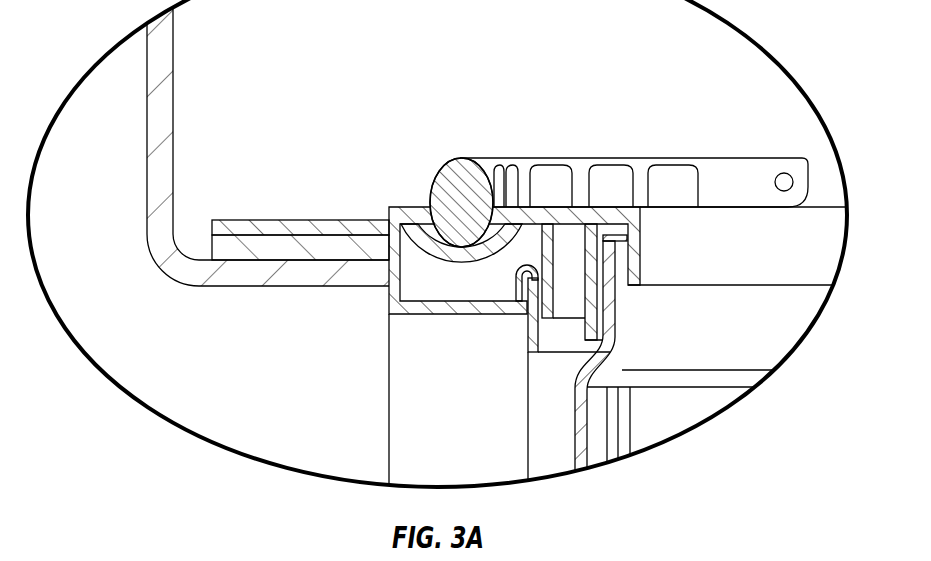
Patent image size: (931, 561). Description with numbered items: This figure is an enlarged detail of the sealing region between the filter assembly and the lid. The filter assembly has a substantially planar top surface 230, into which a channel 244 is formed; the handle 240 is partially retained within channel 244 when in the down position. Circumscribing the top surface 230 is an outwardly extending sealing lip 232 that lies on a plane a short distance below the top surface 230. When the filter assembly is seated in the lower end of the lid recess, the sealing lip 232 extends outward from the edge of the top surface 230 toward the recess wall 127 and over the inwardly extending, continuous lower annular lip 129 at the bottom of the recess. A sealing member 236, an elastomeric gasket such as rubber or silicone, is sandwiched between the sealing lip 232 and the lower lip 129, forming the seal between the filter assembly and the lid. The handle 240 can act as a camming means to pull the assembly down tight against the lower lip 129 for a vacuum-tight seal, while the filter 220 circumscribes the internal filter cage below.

The recess wall 127 is at (147, 145).
The lower annular lip 129 is at (221, 287).
The sealing lip 232 is at (264, 219).
The sealing member 236 is at (212, 248).
The top surface 230 is at (400, 206).
The channel 244 is at (458, 246).
The handle 240 is at (548, 157).
The filter 220 is at (408, 397).